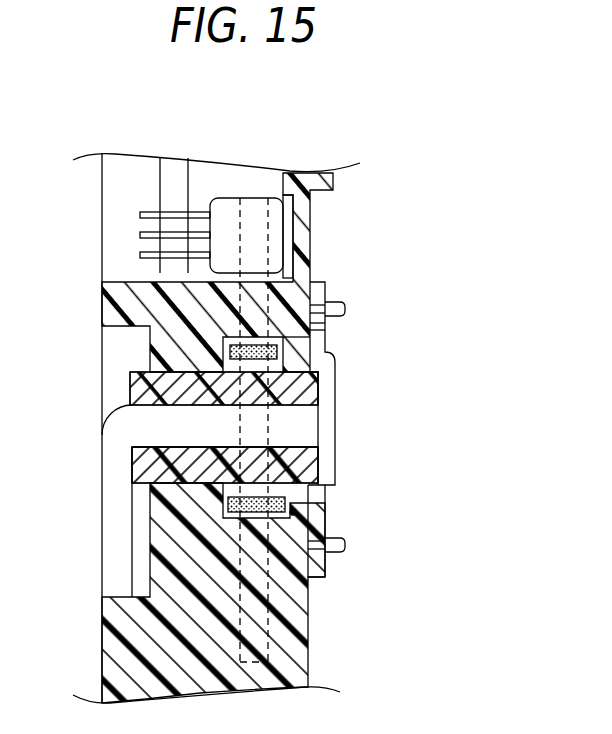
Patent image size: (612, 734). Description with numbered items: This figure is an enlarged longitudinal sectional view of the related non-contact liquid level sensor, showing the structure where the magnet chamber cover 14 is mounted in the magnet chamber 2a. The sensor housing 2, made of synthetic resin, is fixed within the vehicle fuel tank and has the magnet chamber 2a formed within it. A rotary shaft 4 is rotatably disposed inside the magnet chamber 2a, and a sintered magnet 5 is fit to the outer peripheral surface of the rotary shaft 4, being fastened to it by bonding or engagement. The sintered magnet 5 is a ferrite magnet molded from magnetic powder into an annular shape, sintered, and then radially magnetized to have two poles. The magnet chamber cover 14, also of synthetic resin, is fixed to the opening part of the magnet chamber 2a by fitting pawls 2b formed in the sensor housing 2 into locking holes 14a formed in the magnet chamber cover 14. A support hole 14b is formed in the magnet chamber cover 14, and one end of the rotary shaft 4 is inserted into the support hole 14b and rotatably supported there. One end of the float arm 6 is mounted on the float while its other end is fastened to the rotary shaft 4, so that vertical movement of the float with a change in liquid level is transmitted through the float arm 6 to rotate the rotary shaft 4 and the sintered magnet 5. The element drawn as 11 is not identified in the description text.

The sensor housing 2 is at (302, 652).
The magnet chamber 2a is at (325, 506).
The pawls 2b is at (346, 310).
The rotary shaft 4 is at (210, 373).
The sintered magnet 5 is at (282, 352).
The float arm 6 is at (120, 524).
The electronic component 11 is at (224, 212).
The magnet chamber cover 14 is at (335, 488).
The locking holes 14a is at (328, 323).
The support hole 14b is at (320, 374).